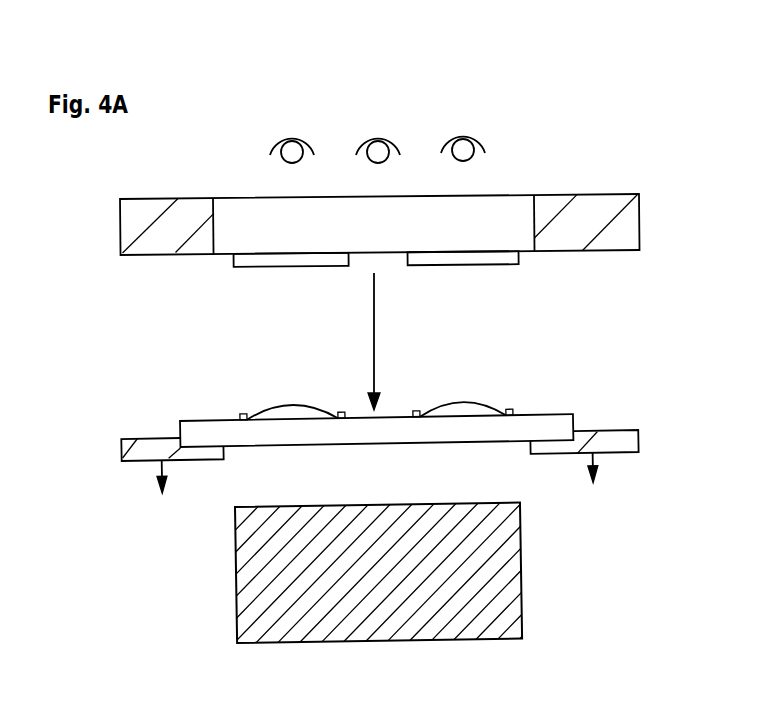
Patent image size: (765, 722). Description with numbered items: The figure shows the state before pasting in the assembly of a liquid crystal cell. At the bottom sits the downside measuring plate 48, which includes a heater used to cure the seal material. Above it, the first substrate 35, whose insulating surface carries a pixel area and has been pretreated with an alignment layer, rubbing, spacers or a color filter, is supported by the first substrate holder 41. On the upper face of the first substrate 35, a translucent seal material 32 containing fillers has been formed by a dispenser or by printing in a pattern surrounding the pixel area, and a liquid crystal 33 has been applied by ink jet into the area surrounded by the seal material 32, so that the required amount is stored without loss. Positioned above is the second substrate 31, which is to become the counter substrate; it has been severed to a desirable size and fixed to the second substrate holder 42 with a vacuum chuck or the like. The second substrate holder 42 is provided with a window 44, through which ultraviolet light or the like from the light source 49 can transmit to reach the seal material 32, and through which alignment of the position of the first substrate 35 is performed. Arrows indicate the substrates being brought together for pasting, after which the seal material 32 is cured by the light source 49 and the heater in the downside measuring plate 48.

The second substrate 31 is at (447, 262).
The seal material 32 is at (415, 415).
The liquid crystal 33 is at (462, 413).
The first substrate 35 is at (525, 431).
The first substrate holder 41 is at (617, 452).
The second substrate holder 42 is at (552, 218).
The window 44 is at (252, 210).
The downside measuring plate 48 is at (497, 548).
The light source 49 is at (378, 147).